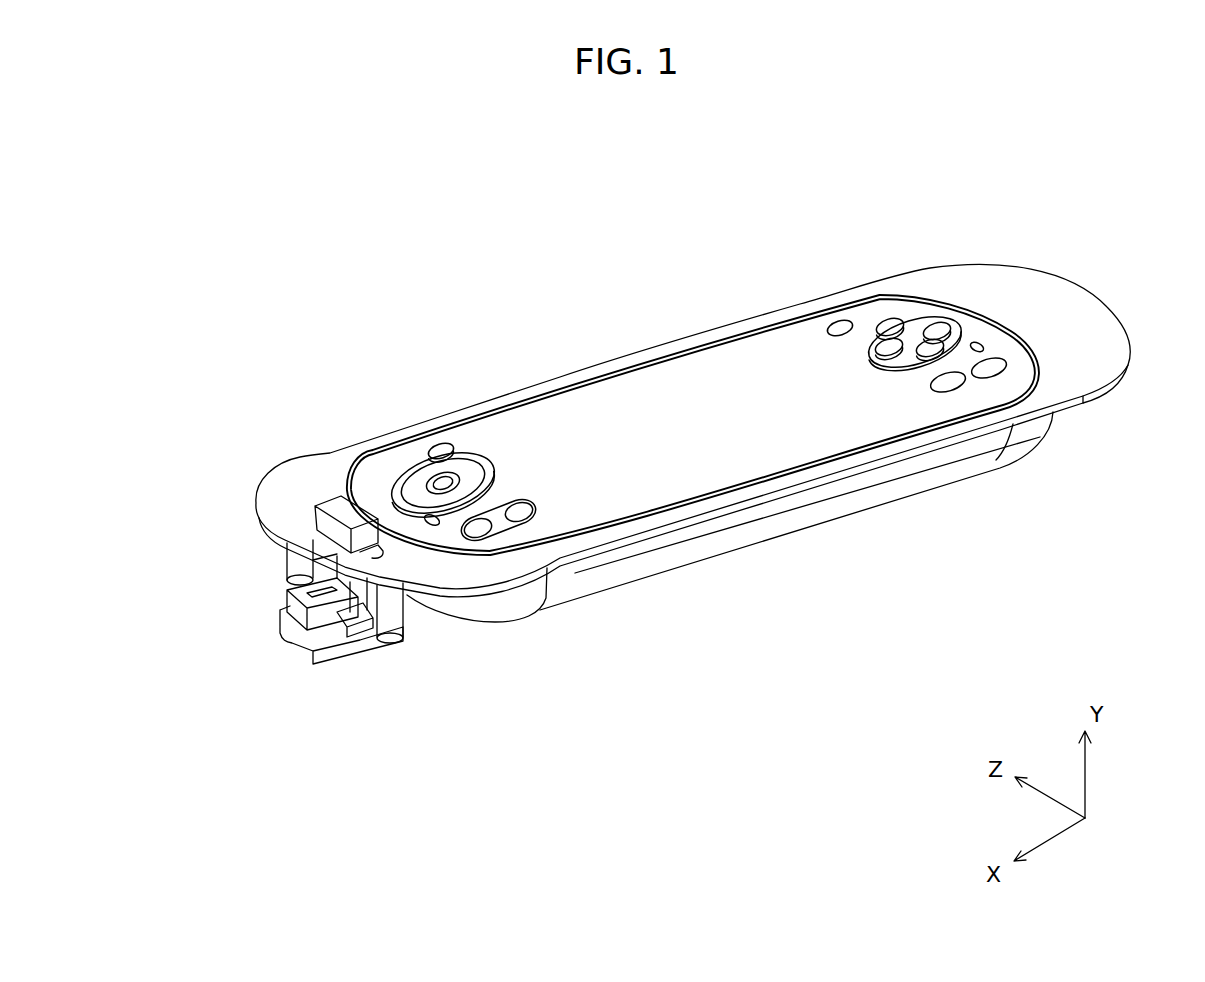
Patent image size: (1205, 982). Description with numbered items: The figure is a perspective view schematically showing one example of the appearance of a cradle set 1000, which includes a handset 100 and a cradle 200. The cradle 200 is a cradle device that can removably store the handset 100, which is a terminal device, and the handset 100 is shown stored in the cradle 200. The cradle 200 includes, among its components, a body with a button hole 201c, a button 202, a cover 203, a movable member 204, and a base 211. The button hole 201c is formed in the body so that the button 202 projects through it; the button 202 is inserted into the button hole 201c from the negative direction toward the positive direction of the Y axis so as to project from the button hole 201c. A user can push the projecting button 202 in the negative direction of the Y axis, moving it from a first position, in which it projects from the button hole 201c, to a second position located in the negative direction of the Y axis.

The cradle set 1000 is at (888, 164).
The handset 100 is at (652, 387).
The cradle 200 is at (1050, 323).
The button hole 201c is at (372, 560).
The button 202 is at (336, 503).
The cover 203 is at (297, 610).
The movable member 204 is at (348, 648).
The base 211 is at (327, 647).